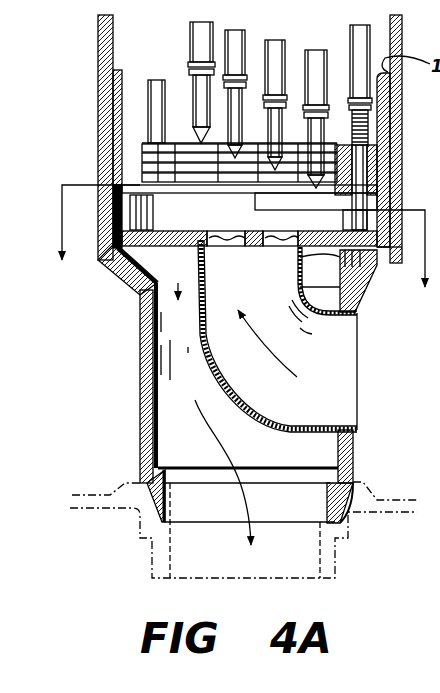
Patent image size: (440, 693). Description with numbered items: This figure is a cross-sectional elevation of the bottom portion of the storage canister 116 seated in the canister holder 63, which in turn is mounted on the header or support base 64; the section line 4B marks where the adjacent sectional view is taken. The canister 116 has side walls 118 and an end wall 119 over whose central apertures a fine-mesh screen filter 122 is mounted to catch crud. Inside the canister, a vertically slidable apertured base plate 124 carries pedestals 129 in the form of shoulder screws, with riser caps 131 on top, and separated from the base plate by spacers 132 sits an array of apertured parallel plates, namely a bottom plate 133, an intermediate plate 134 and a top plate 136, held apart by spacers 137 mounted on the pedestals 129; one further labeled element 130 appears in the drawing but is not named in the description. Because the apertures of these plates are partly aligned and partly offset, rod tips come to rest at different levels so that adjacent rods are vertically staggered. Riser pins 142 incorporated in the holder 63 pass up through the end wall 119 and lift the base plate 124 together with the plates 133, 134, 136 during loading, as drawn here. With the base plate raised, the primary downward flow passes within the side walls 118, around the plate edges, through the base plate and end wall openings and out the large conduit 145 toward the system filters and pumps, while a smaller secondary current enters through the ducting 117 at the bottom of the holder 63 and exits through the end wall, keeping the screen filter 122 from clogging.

The storage canister 116 is at (78, 50).
The side walls 118 is at (116, 70).
The riser caps 131 is at (155, 80).
The top plate 136 is at (165, 135).
The intermediate plate 134 is at (148, 148).
The bottom plate 133 is at (140, 163).
The spacers 132 is at (143, 184).
The apertured base plate 124 is at (105, 223).
The canister holder 63 is at (118, 276).
The riser pins 142 is at (130, 298).
The large conduit 145 is at (185, 443).
The header or support base 64 is at (108, 493).
The pin assembly 130 is at (358, 40).
The spacers 137 is at (398, 163).
The pedestals 129 is at (377, 163).
The screen filter 122 is at (248, 152).
The end wall 119 is at (350, 306).
The ducting 117 is at (330, 428).
The section line 4B is at (238, 252).